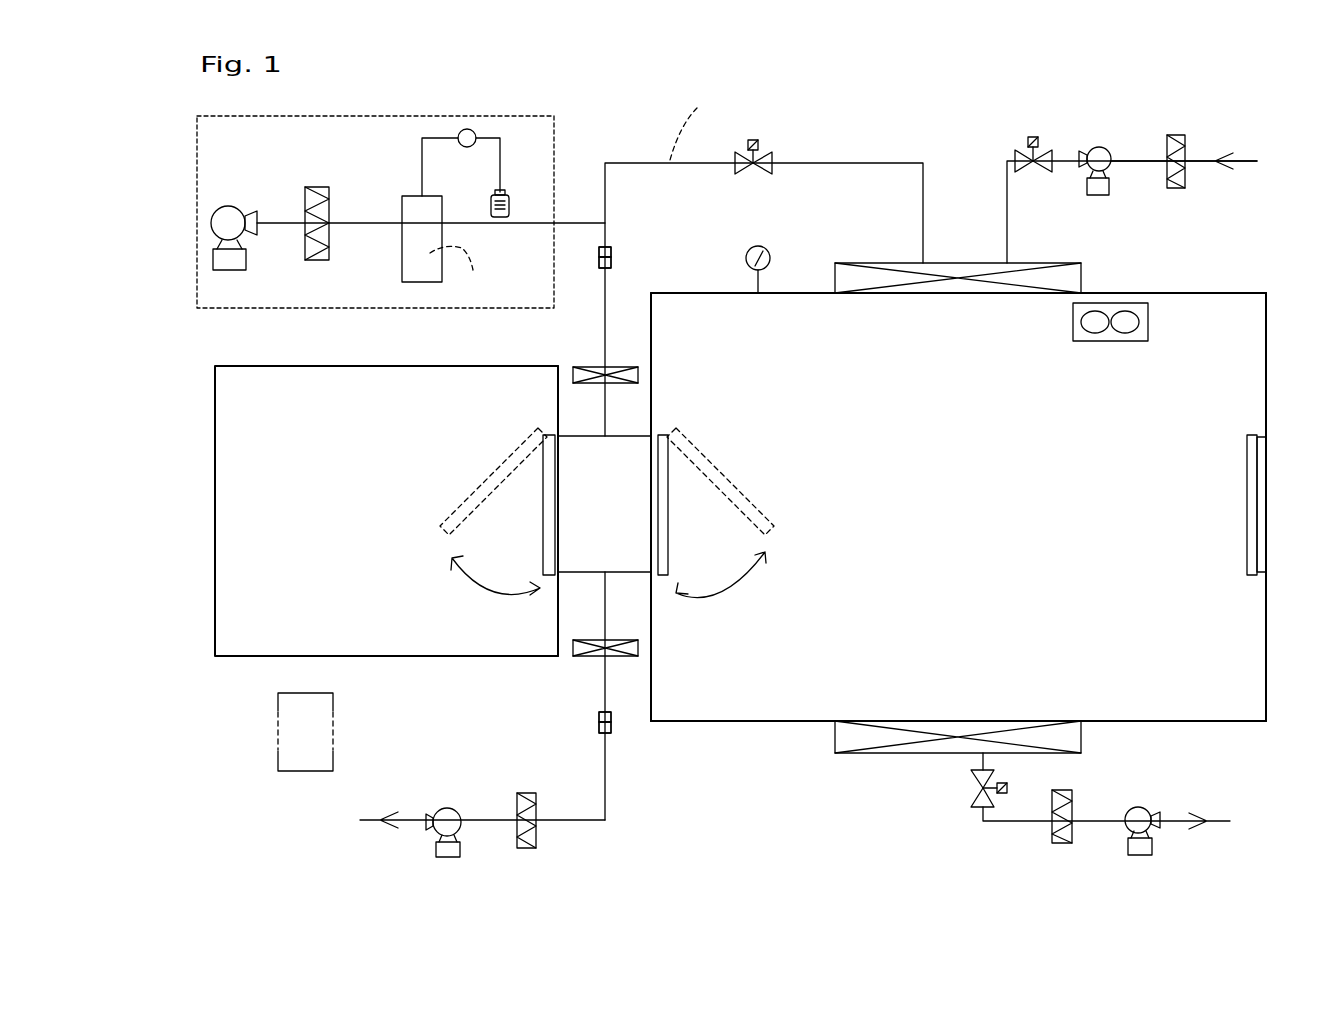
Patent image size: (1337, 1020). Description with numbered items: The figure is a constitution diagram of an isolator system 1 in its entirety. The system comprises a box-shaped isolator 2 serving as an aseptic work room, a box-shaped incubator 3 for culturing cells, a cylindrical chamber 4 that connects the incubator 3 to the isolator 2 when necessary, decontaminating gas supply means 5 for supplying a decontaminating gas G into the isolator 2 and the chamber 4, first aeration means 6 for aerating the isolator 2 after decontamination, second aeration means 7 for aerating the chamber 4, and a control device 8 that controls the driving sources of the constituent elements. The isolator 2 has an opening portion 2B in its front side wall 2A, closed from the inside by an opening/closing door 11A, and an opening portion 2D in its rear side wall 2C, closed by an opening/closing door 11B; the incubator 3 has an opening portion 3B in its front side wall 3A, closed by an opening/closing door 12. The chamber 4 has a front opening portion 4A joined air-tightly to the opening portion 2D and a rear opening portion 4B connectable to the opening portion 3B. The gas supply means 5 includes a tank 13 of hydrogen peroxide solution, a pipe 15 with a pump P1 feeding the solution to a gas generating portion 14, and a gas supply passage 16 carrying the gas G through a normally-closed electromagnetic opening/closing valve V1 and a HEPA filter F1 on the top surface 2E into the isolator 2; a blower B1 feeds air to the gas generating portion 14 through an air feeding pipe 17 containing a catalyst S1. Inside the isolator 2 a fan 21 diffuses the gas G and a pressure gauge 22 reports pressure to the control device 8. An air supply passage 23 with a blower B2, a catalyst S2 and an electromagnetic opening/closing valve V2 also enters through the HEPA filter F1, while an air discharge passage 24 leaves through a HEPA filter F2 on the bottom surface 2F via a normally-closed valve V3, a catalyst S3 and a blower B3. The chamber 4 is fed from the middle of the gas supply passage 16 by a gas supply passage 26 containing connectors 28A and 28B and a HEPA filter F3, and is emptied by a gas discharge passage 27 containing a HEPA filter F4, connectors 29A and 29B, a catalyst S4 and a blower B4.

The isolator system 1 is at (901, 103).
The isolator 2 is at (980, 444).
The side wall 2A is at (1266, 398).
The opening portion 2B is at (1266, 490).
The side wall 2C is at (651, 668).
The opening portion 2D is at (651, 540).
The top surface 2E is at (910, 299).
The bottom surface 2F is at (815, 721).
The incubator 3 is at (399, 382).
The side wall 3A is at (558, 626).
The opening portion 3B is at (558, 456).
The chamber 4 is at (634, 430).
The opening portion 4A is at (651, 493).
The opening portion 4B is at (558, 528).
The decontaminating gas supply means 5 is at (399, 127).
The first aeration means 6 is at (1030, 103).
The second aeration means 7 is at (619, 820).
The control device 8 is at (320, 757).
The opening/closing door 11A is at (1250, 515).
The opening/closing door 11B is at (668, 536).
The opening/closing door 12 is at (465, 497).
The tank 13 is at (508, 203).
The gas generating portion 14 is at (413, 259).
The pipe 15 is at (422, 172).
The gas supply passage 16 is at (572, 222).
The air feeding pipe 17 is at (360, 223).
The fan 21 is at (1118, 333).
The pressure gauge 22 is at (756, 250).
The air supply passage 23 is at (1138, 163).
The air discharge passage 24 is at (1017, 818).
The gas supply passage 26 is at (605, 292).
The gas discharge passage 27 is at (605, 767).
The connector 28A is at (599, 253).
The connector 28B is at (599, 266).
The connector 29A is at (611, 717).
The connector 29B is at (611, 726).
The blower B1 is at (230, 255).
The blower B2 is at (1094, 190).
The blower B3 is at (1142, 812).
The blower B4 is at (455, 820).
The HEPA filter F1 is at (957, 270).
The HEPA filter F2 is at (949, 728).
The HEPA filter F3 is at (618, 367).
The HEPA filter F4 is at (618, 645).
The decontaminating gas G is at (571, 198).
The pump P1 is at (470, 130).
The catalyst S1 is at (318, 250).
The catalyst S2 is at (1178, 190).
The catalyst S3 is at (1050, 832).
The catalyst S4 is at (537, 802).
The electromagnetic opening/closing valve V1 is at (760, 172).
The electromagnetic opening/closing valve V2 is at (1040, 150).
The electromagnetic opening/closing valve V3 is at (974, 794).